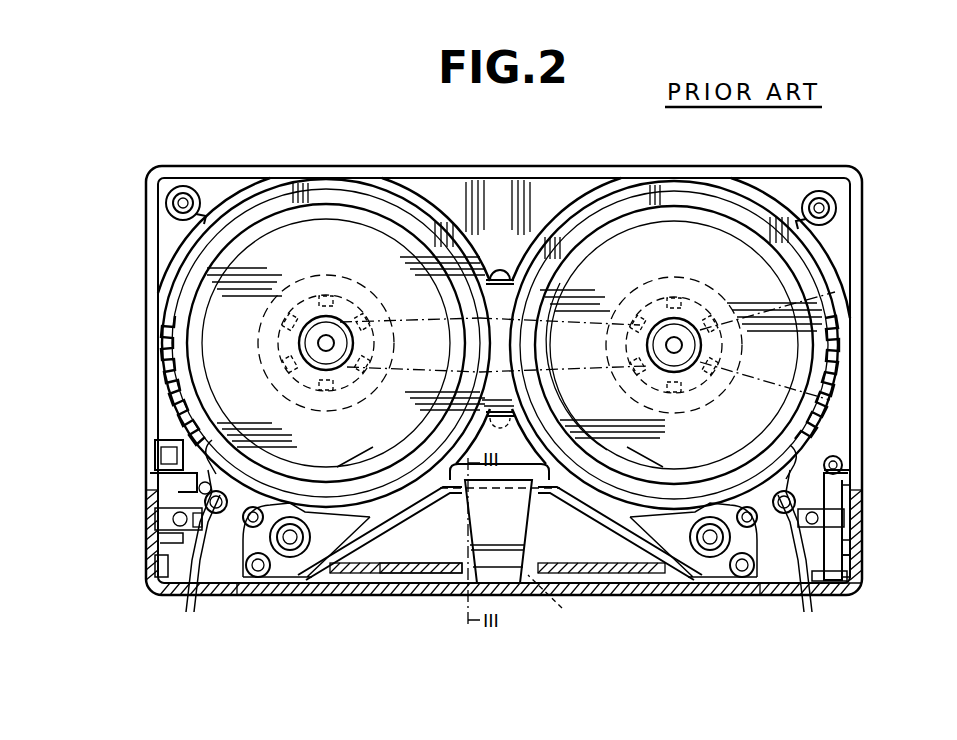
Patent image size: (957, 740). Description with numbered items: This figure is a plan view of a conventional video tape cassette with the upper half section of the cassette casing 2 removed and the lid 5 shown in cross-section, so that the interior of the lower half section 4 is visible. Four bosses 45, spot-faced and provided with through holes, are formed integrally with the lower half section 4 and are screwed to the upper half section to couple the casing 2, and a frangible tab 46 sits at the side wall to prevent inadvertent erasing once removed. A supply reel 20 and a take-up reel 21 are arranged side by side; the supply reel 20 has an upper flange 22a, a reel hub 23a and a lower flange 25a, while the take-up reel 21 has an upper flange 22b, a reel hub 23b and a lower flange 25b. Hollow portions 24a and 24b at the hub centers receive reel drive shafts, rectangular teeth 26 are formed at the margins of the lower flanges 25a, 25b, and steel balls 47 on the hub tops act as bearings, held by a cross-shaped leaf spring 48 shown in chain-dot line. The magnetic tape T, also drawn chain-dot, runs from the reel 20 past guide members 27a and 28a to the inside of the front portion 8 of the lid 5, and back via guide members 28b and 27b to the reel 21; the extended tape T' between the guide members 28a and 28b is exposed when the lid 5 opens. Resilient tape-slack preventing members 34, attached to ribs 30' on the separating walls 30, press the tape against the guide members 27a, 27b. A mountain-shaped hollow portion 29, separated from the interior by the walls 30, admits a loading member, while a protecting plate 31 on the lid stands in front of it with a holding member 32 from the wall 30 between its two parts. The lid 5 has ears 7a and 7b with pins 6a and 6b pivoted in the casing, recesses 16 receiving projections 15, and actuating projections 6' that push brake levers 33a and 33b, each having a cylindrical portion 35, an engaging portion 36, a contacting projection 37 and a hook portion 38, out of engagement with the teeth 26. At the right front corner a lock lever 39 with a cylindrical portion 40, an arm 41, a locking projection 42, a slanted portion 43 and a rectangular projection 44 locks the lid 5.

The cassette casing 2 is at (520, 154).
The lower half section 4 is at (548, 178).
The lid 5 is at (590, 594).
The front portion 8 is at (386, 585).
The projections 15 is at (237, 592).
The recesses 16 is at (178, 596).
The supply reel 20 is at (690, 254).
The take-up reel 21 is at (350, 248).
The upper flange 22a is at (672, 215).
The upper flange 22b is at (333, 212).
The reel hub 23a is at (630, 300).
The reel hub 23b is at (288, 290).
The hollow portion 24a is at (700, 348).
The hollow portion 24b is at (347, 380).
The lower flange 25a is at (792, 300).
The lower flange 25b is at (190, 292).
The rectangular teeth 26 is at (167, 348).
The guide member 27a is at (750, 527).
The guide member 27b is at (250, 526).
The guide member 28a is at (737, 578).
The guide member 28b is at (262, 578).
The mountain-shaped hollow portion 29 is at (450, 560).
The separating walls 30 is at (500, 533).
The ribs 30' is at (534, 472).
The protecting plate 31 is at (560, 566).
The holding member 32 is at (518, 510).
The brake lever 33a is at (189, 606).
The brake lever 33b is at (806, 606).
The tape-slack preventing members 34 is at (292, 512).
The cylindrical portion 35 is at (152, 478).
The engaging portion 36 is at (212, 445).
The contacting projection 37 is at (158, 538).
The hook portion 38 is at (198, 488).
The lock lever 39 is at (848, 488).
The cylindrical portion 40 is at (852, 457).
The arm 41 is at (860, 549).
The locking projection 42 is at (862, 574).
The slanted portion 43 is at (830, 598).
The rectangular parallelopiped projection 44 is at (860, 536).
The bosses 45 is at (184, 198).
The frangible tab 46 is at (155, 452).
The steel balls 47 is at (320, 343).
The cross-shaped leaf spring 48 is at (598, 372).
The pin 6a is at (155, 519).
The pin 6b is at (840, 518).
The actuating projections 6' is at (505, 578).
The ear 7a is at (155, 566).
The ear 7b is at (862, 558).
The magnetic tape T is at (615, 329).
The magnetic tape T' is at (550, 604).